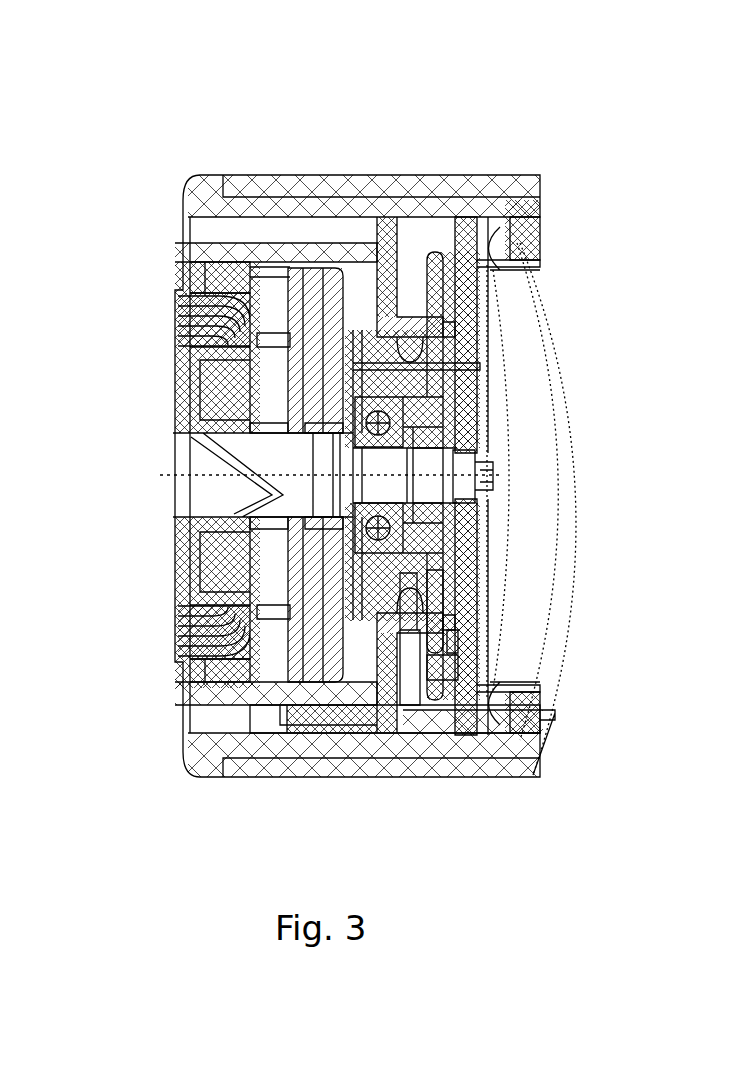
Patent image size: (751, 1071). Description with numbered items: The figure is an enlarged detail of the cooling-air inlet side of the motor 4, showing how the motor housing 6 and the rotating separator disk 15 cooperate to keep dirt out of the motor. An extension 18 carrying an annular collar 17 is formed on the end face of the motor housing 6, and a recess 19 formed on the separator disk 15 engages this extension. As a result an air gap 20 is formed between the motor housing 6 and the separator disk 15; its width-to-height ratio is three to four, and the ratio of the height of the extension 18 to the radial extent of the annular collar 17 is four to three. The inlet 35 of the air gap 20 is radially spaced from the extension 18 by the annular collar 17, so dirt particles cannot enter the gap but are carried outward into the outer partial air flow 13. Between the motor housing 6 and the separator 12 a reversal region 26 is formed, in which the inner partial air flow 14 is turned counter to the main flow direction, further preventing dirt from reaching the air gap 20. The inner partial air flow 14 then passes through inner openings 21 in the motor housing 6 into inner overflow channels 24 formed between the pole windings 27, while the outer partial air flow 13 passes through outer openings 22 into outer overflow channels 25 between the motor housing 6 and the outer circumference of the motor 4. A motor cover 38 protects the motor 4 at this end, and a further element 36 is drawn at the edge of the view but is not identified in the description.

The motor 4 is at (228, 377).
The motor housing 6 is at (203, 205).
The separator 12 is at (602, 476).
The outer partial air flow 13 is at (263, 723).
The inner partial air flow 14 is at (392, 648).
The separator disk 15 is at (470, 317).
The annular collar 17 is at (433, 647).
The extension 18 is at (410, 630).
The recess 19 is at (457, 295).
The air gap 20 is at (448, 637).
The inner openings 21 is at (437, 357).
The outer openings 22 is at (390, 227).
The inner overflow channel 24 is at (312, 635).
The outer overflow channel 25 is at (283, 225).
The reversal region 26 is at (433, 287).
The pole windings 27 is at (213, 637).
The inlet 35 is at (428, 658).
The fan wheel 36 is at (619, 509).
The motor cover 38 is at (320, 312).